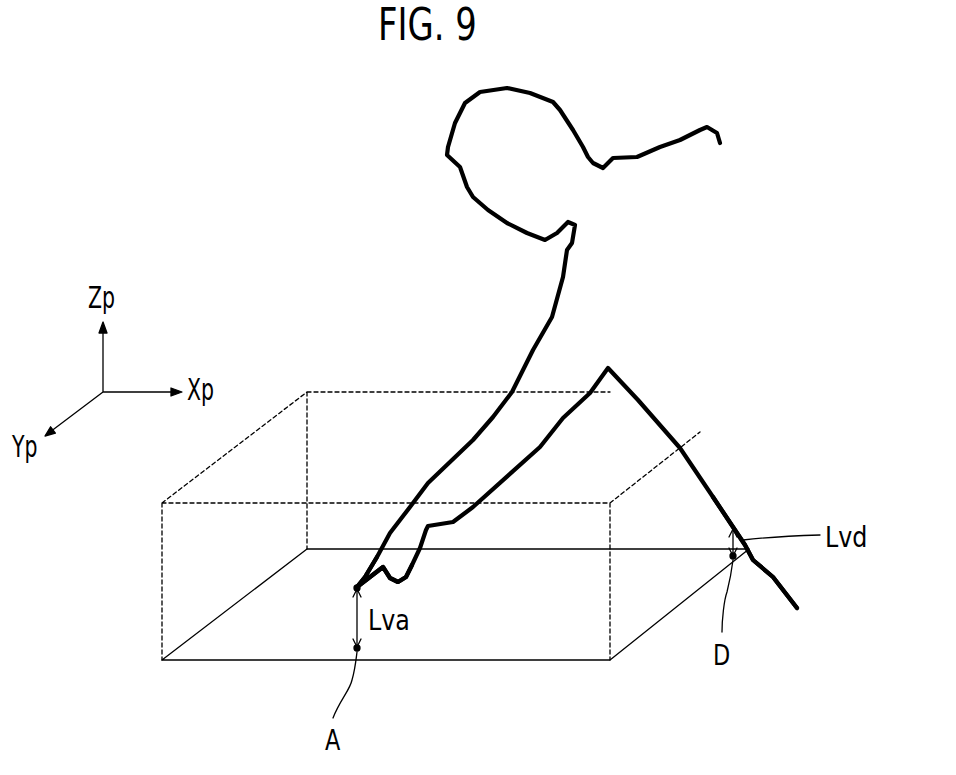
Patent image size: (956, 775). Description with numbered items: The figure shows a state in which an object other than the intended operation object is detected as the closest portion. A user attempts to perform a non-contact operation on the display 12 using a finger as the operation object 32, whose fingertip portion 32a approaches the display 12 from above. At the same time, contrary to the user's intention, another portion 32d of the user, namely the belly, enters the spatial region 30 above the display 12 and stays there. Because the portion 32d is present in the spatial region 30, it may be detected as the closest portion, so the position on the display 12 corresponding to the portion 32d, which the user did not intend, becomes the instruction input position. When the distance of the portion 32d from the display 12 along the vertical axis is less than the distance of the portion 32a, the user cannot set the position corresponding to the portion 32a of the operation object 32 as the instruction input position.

The display 12 is at (295, 638).
The spatial region 30 is at (178, 533).
The operation object 32 is at (373, 533).
The portion 32a is at (349, 581).
The portion 32d is at (722, 530).